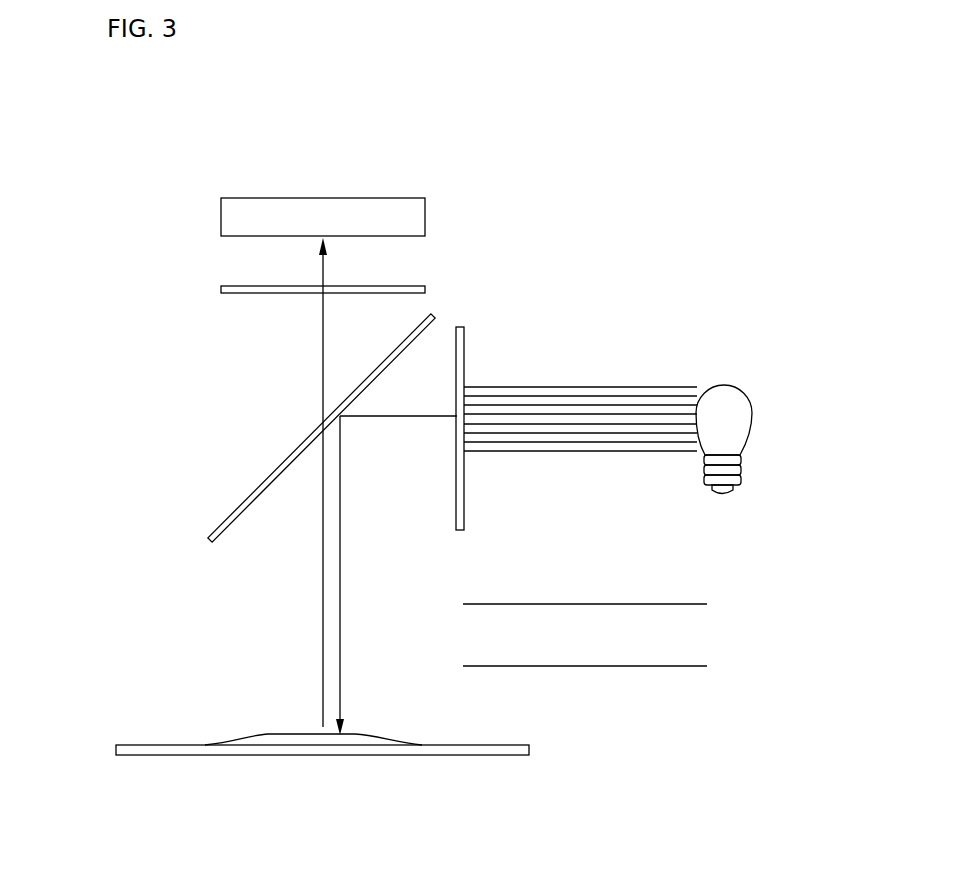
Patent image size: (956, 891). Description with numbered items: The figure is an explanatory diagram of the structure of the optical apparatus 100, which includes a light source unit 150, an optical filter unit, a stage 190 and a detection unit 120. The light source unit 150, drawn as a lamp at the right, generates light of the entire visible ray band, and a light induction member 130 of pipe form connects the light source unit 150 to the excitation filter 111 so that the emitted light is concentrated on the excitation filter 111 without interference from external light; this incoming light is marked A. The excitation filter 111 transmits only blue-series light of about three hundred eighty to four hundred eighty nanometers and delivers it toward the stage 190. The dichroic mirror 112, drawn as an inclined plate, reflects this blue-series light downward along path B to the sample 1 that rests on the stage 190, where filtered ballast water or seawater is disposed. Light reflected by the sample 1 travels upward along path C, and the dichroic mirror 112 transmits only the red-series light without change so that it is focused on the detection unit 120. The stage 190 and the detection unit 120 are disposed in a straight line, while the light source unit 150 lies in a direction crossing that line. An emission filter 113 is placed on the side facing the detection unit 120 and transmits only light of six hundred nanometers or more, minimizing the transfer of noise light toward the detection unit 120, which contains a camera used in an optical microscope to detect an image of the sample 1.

The optical apparatus 100 is at (576, 164).
The detection unit 120 is at (221, 220).
The emission filter 113 is at (221, 290).
The dichroic mirror 112 is at (226, 520).
The excitation filter 111 is at (464, 341).
The light induction member 130 is at (633, 397).
The light source unit 150 is at (742, 388).
The stage 190 is at (116, 748).
The sample / object 1 is at (387, 740).
The light from source A is at (587, 430).
The illumination light path B is at (346, 518).
The reflected light path C is at (323, 337).